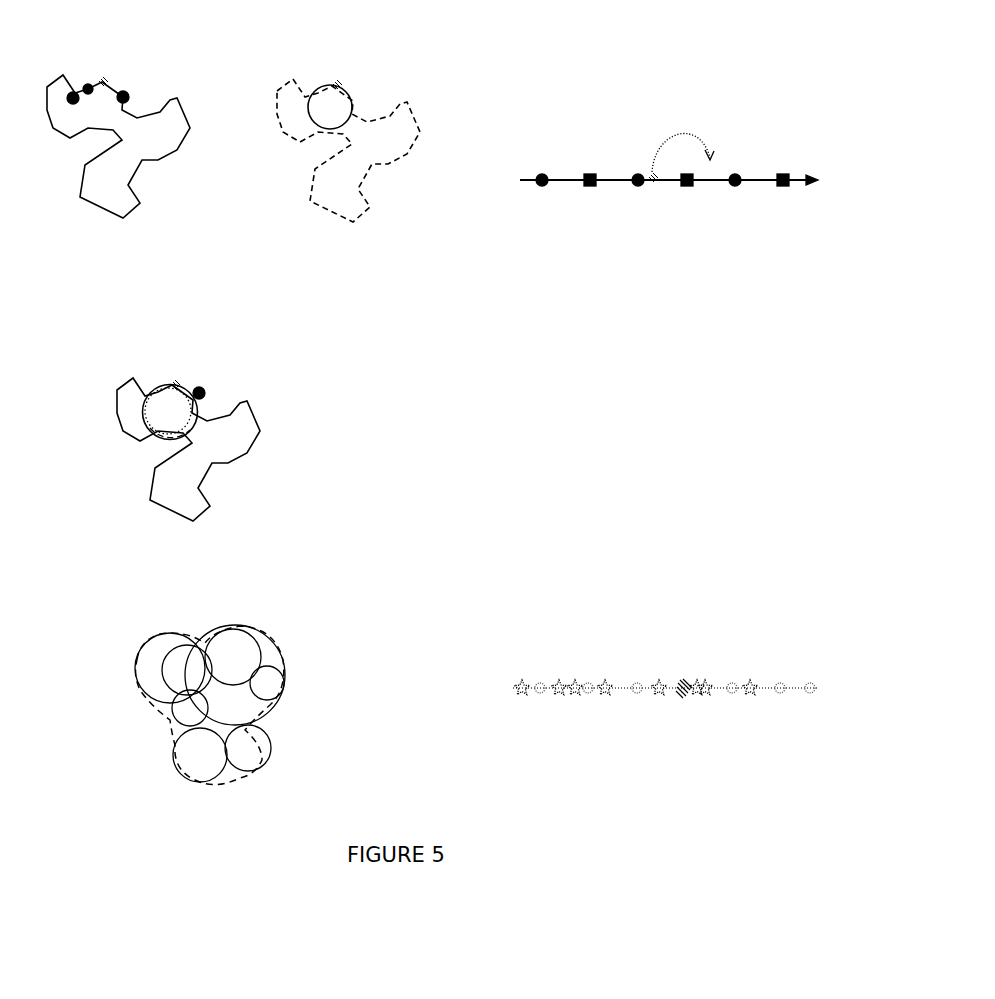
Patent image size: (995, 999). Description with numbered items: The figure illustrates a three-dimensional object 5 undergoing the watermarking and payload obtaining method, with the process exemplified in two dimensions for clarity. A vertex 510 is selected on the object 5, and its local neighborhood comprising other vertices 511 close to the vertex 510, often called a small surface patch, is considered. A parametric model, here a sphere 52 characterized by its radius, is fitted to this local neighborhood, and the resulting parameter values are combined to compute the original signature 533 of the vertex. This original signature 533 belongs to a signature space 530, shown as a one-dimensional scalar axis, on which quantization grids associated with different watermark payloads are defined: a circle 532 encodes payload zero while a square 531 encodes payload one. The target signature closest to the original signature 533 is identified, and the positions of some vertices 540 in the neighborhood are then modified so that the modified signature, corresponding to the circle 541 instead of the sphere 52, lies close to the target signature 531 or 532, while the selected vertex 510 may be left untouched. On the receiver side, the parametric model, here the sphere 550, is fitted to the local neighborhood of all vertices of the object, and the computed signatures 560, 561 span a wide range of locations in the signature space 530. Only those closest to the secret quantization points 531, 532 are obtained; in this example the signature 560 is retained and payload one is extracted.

The 3D object 5 is at (155, 177).
The other vertices 511 is at (122, 92).
The vertex 510 is at (107, 80).
The sphere 52 is at (350, 97).
The vertices 540 is at (203, 392).
The circle 541 is at (158, 443).
The signature space 530 is at (818, 178).
The square 531 is at (688, 178).
The circle 532 is at (638, 178).
The original signature 533 is at (652, 188).
The sphere 550 is at (268, 640).
The computed signature 561 is at (659, 678).
The computed signature 560 is at (682, 680).